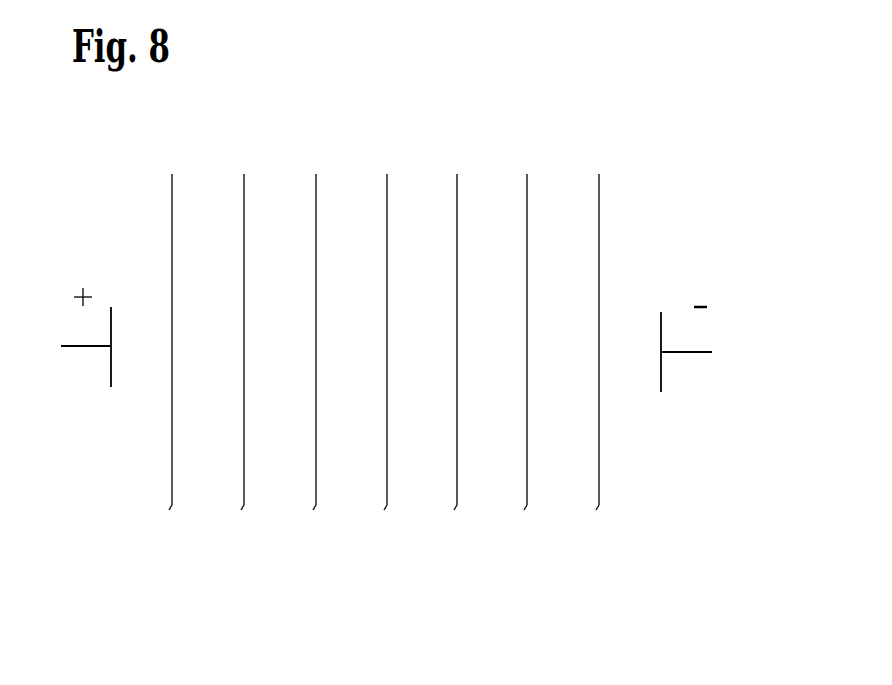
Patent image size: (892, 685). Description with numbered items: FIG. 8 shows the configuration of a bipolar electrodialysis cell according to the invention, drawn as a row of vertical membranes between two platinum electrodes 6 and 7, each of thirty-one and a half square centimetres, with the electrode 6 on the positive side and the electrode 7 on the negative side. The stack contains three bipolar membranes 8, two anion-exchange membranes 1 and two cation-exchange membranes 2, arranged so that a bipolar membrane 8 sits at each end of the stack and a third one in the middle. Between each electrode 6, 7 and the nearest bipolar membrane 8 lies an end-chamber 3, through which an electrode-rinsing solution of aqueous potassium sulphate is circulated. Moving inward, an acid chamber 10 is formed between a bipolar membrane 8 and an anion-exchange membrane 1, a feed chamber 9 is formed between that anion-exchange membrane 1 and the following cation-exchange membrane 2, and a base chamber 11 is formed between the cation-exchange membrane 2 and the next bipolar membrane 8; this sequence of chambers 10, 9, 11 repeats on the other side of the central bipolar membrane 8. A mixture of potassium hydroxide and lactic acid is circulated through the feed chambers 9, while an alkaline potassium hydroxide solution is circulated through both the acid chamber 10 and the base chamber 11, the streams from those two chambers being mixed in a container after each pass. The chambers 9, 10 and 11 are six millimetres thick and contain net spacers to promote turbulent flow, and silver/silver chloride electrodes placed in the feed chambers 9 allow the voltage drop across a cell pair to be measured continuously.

The anion-exchange membrane 1 is at (241, 510).
The cation-exchange membrane 2 is at (313, 510).
The end-chamber 3 is at (387, 220).
The platinum electrode 6 is at (61, 346).
The platinum electrode 7 is at (712, 352).
The bipolar membrane 8 is at (169, 510).
The feed chamber 9 is at (382, 220).
The acid chamber 10 is at (315, 220).
The base chamber 11 is at (462, 220).